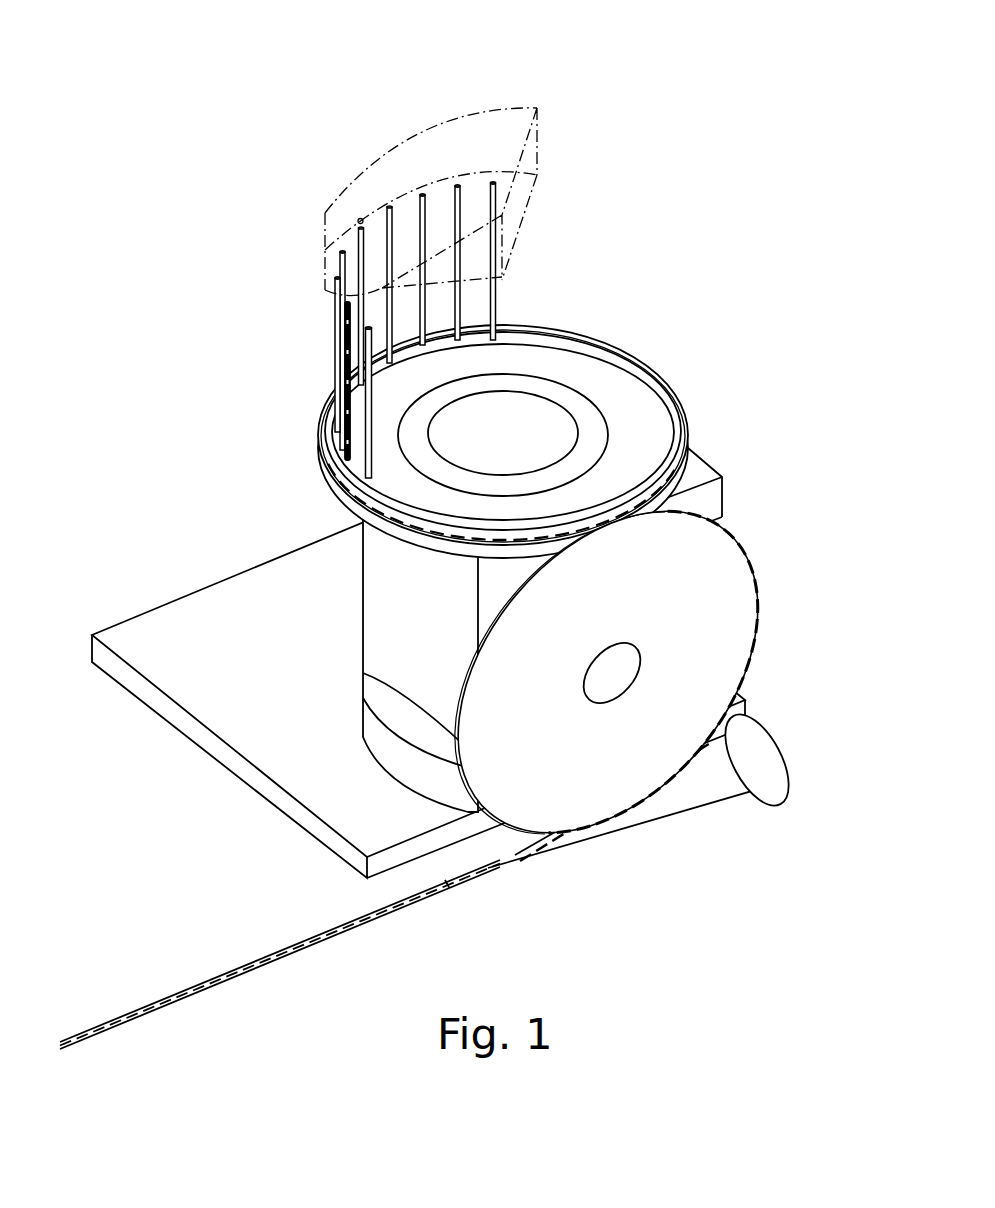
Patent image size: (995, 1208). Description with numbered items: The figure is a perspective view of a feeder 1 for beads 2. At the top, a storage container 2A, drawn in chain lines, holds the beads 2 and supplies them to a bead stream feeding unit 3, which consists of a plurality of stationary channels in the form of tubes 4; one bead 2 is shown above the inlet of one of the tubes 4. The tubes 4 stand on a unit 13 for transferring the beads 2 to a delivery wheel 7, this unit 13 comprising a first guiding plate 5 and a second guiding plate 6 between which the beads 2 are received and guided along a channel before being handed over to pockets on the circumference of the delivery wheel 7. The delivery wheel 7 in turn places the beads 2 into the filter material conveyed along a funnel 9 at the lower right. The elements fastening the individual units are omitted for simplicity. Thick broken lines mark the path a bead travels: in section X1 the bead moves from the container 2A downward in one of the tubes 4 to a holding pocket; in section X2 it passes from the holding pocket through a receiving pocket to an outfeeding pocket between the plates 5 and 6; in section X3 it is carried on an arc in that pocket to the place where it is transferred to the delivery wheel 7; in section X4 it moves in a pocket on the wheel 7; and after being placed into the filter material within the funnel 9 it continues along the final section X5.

The feeder 1 is at (650, 213).
The bead 2 is at (358, 219).
The storage container 2A is at (498, 118).
The bead stream feeding unit 3 is at (305, 280).
The tube 4 is at (422, 194).
The first guiding plate 5 is at (333, 480).
The second guiding plate 6 is at (330, 438).
The delivery wheel 7 is at (690, 572).
The funnel 9 is at (690, 805).
The unit for transferring the beads 13 is at (283, 482).
The first section of the bead path X1 is at (345, 377).
The second section of the bead path X2 is at (323, 462).
The third section of the bead path X3 is at (427, 540).
The fourth section of the bead path X4 is at (762, 608).
The final section of the bead path X5 is at (225, 970).